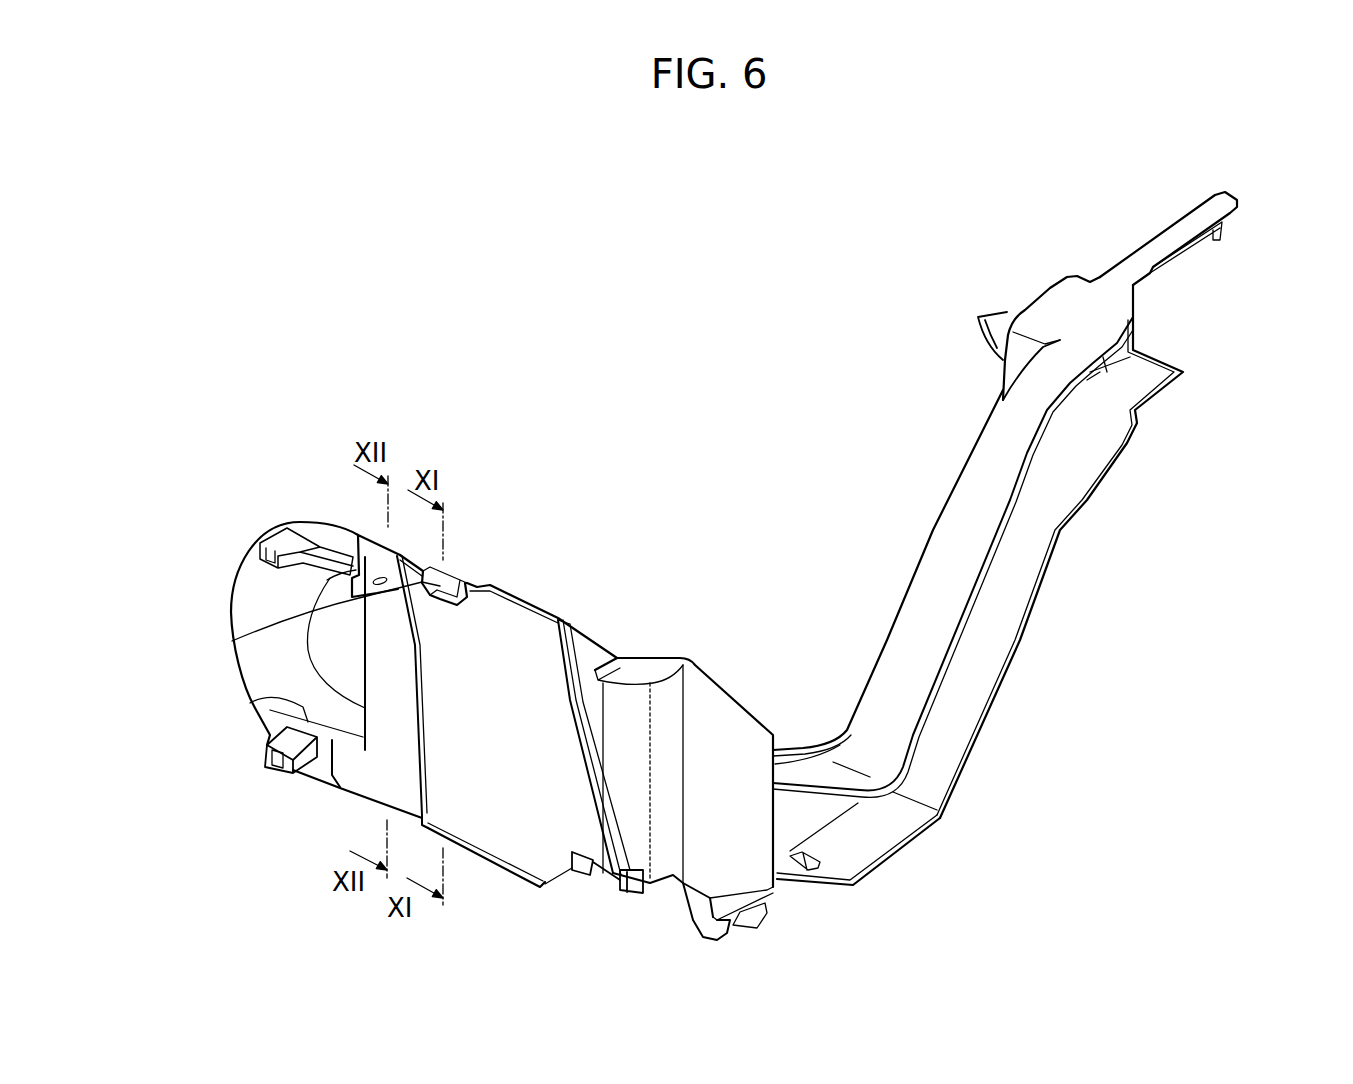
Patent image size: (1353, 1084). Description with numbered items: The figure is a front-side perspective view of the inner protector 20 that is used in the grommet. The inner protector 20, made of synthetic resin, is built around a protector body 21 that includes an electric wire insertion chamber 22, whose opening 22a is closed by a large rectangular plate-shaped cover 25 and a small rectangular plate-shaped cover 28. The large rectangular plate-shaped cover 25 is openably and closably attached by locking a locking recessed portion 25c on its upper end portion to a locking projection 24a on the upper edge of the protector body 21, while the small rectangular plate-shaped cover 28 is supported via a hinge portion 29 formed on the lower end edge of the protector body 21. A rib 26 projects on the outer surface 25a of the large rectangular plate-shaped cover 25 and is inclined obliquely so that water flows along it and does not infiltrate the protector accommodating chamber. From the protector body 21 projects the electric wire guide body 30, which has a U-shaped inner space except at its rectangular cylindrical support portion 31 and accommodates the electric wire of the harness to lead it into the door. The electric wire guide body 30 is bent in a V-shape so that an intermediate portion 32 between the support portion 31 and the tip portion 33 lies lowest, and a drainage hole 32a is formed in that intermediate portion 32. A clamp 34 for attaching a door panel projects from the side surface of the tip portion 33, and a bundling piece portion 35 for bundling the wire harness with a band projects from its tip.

The inner protector 20 is at (799, 538).
The protector body 21 is at (304, 519).
The electric wire insertion chamber 22 is at (332, 618).
The opening 22a is at (264, 707).
The locking projection 24a is at (448, 576).
The large rectangular plate-shaped cover 25 is at (531, 590).
The outer surface 25a is at (500, 847).
The locking recessed portion 25c is at (232, 641).
The rib 26 is at (598, 788).
The small rectangular plate-shaped cover 28 is at (374, 538).
The hinge portion 29 is at (362, 803).
The electric wire guide body 30 is at (1013, 677).
The support portion 31 is at (655, 672).
The intermediate portion 32 is at (853, 890).
The drainage hole 32a is at (805, 873).
The tip portion 33 is at (1057, 308).
The clamp 34 is at (978, 317).
The bundling piece portion 35 is at (1133, 253).